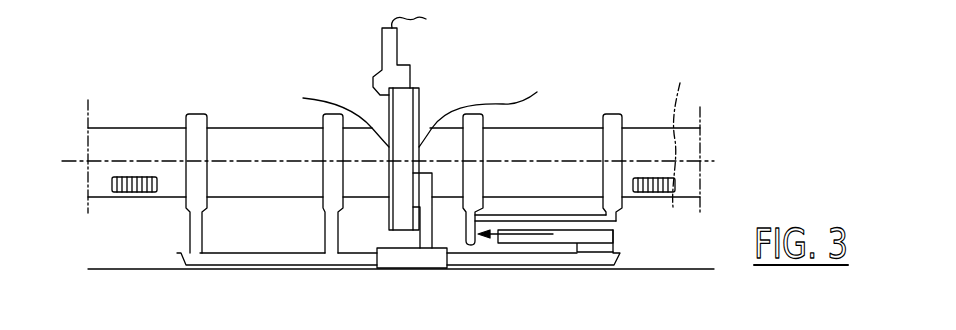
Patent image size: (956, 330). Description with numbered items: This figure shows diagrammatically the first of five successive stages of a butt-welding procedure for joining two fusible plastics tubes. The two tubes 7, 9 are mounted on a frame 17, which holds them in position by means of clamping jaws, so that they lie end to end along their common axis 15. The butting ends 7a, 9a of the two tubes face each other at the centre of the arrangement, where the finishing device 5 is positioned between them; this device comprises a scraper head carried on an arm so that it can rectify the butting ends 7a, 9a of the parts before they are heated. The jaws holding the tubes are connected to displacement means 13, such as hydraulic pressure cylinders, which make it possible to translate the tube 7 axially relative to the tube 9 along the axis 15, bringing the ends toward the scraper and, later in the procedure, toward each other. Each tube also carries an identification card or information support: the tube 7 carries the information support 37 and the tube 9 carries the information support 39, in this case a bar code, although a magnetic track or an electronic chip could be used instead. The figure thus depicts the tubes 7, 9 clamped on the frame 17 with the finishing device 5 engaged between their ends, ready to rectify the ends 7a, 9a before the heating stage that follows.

The finishing device 5 is at (405, 107).
The fusible plastics tube 7 is at (578, 145).
The butting end of tube 7a is at (486, 83).
The fusible plastics tube 9 is at (238, 147).
The butting end of tube 9a is at (340, 83).
The displacement means 13 is at (571, 235).
The common axis 15 is at (691, 131).
The frame 17 is at (271, 265).
The information support 37 is at (662, 192).
The information support 39 is at (130, 192).